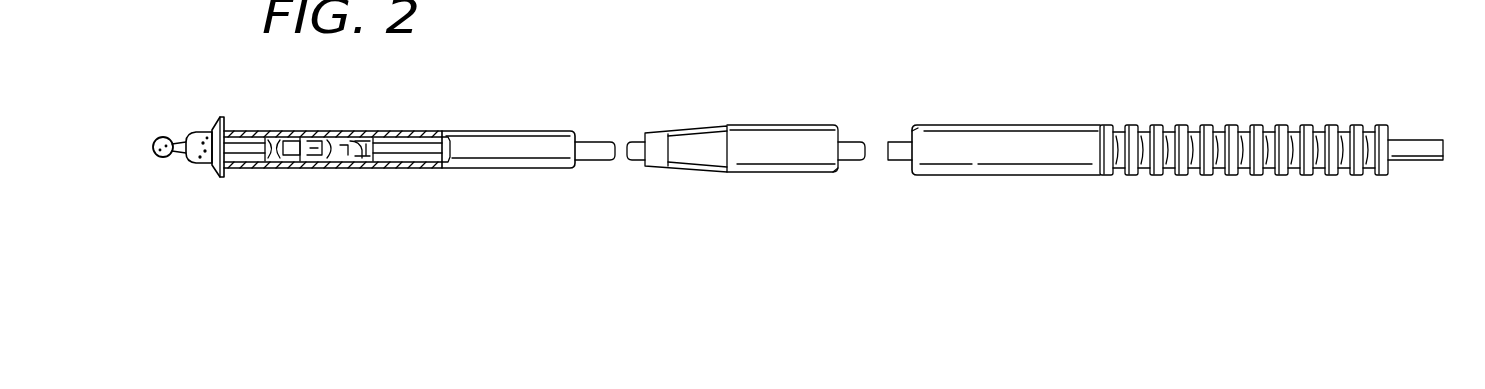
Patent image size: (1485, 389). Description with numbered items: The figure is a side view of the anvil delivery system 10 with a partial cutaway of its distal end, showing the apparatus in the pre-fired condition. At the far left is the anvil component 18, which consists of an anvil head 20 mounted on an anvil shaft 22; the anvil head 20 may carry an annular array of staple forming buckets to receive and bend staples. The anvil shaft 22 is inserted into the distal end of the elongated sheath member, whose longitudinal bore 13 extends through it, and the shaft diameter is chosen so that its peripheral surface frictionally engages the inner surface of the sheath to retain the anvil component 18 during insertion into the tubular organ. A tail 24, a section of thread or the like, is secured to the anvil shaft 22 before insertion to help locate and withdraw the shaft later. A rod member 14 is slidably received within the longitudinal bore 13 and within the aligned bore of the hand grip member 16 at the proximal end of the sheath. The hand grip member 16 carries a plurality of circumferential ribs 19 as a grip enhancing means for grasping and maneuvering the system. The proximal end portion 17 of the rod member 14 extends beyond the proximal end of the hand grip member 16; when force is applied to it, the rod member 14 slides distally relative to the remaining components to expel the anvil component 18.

The anvil delivery system 10 is at (693, 111).
The longitudinal bore 13 is at (362, 160).
The rod member 14 is at (432, 148).
The hand grip member 16 is at (1197, 117).
The proximal end portion 17 is at (1408, 150).
The anvil component 18 is at (166, 124).
The circumferential ribs 19 is at (1281, 175).
The anvil head 20 is at (189, 168).
The anvil shaft 22 is at (247, 170).
The tail 24 is at (341, 172).